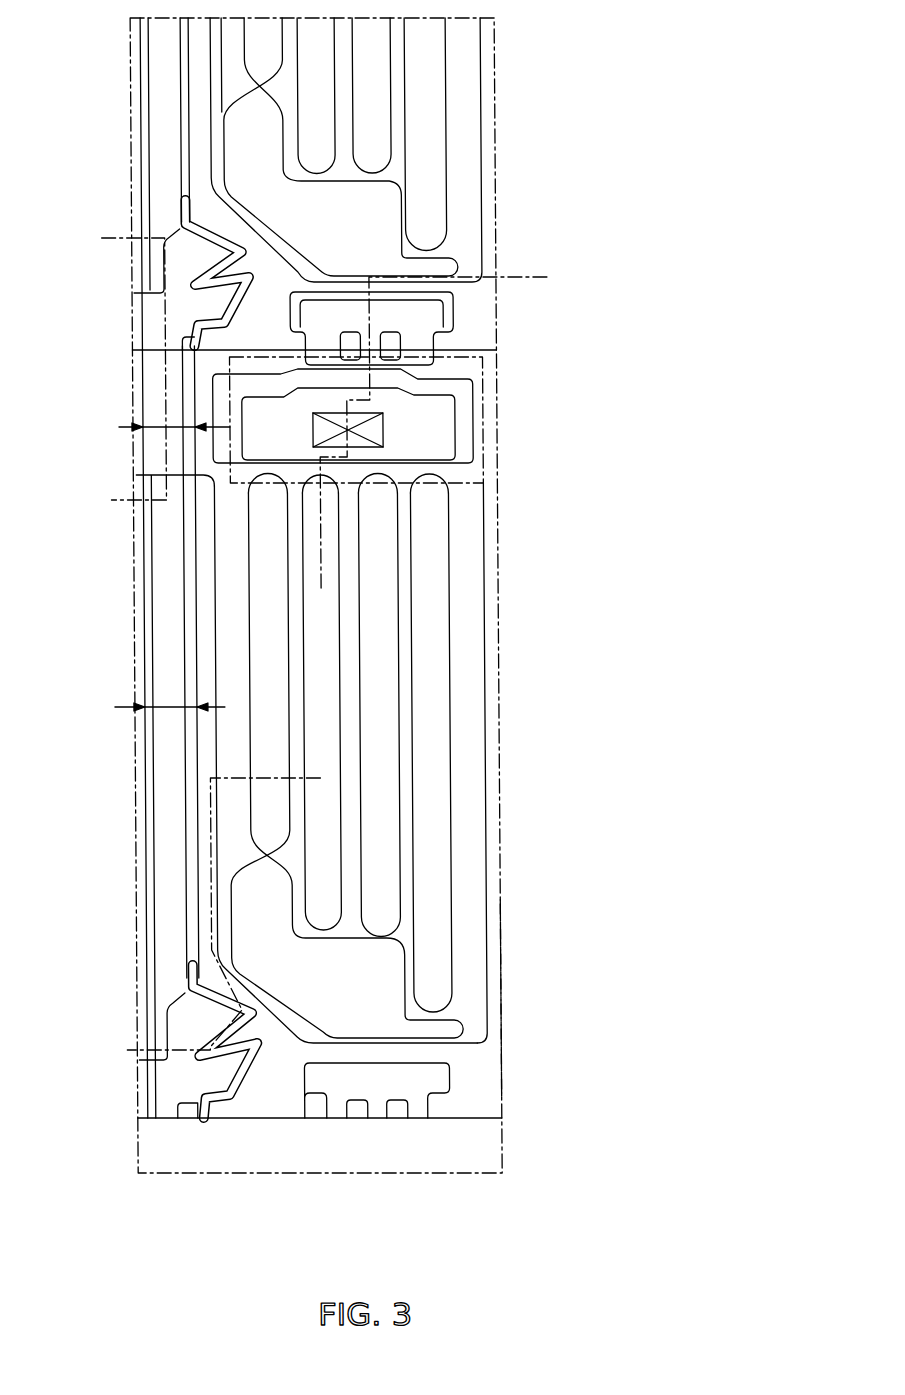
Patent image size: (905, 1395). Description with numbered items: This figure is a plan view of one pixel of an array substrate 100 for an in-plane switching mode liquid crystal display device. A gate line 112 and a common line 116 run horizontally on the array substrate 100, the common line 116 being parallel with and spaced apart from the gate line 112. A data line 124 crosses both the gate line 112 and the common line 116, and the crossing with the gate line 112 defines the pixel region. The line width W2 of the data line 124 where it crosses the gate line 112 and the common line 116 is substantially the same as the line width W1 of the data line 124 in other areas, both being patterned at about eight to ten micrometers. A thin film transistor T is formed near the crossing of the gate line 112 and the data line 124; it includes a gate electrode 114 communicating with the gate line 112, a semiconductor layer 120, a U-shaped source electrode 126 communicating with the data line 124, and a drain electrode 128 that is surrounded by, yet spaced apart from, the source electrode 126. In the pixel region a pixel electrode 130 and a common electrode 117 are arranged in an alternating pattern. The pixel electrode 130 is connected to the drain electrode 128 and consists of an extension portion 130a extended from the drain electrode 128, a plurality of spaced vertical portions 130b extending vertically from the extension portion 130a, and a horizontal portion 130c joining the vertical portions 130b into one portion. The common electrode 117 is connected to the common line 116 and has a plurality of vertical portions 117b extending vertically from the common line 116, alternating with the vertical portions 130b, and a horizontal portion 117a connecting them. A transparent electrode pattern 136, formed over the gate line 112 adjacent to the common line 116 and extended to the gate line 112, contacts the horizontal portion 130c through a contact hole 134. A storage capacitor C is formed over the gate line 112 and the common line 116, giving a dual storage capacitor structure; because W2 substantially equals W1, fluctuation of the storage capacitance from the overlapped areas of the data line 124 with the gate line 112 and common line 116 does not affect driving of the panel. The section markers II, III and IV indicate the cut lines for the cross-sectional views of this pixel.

The array substrate 100 is at (494, 596).
The gate line 112 is at (486, 293).
The gate electrode 114 is at (178, 993).
The common line 116 is at (372, 440).
The common electrode 117 is at (574, 791).
The horizontal portion 117a is at (497, 985).
The vertical portions 117b is at (450, 1041).
The semiconductor layer 120 is at (259, 1063).
The data line 124 is at (139, 554).
The source electrode 126 is at (202, 1113).
The drain electrode 128 is at (357, 1113).
The pixel electrode 130 is at (606, 421).
The extension portion 130a is at (433, 1047).
The vertical portions 130b is at (436, 494).
The horizontal portion 130c is at (452, 440).
The contact hole 134 is at (470, 368).
The transparent electrode pattern 136 is at (456, 301).
The storage capacitor C is at (453, 325).
The thin film transistor T is at (136, 1000).
The line width W1 is at (162, 705).
The line width W2 is at (160, 427).
The section line II is at (220, 914).
The section line III is at (448, 439).
The section line IV is at (117, 373).